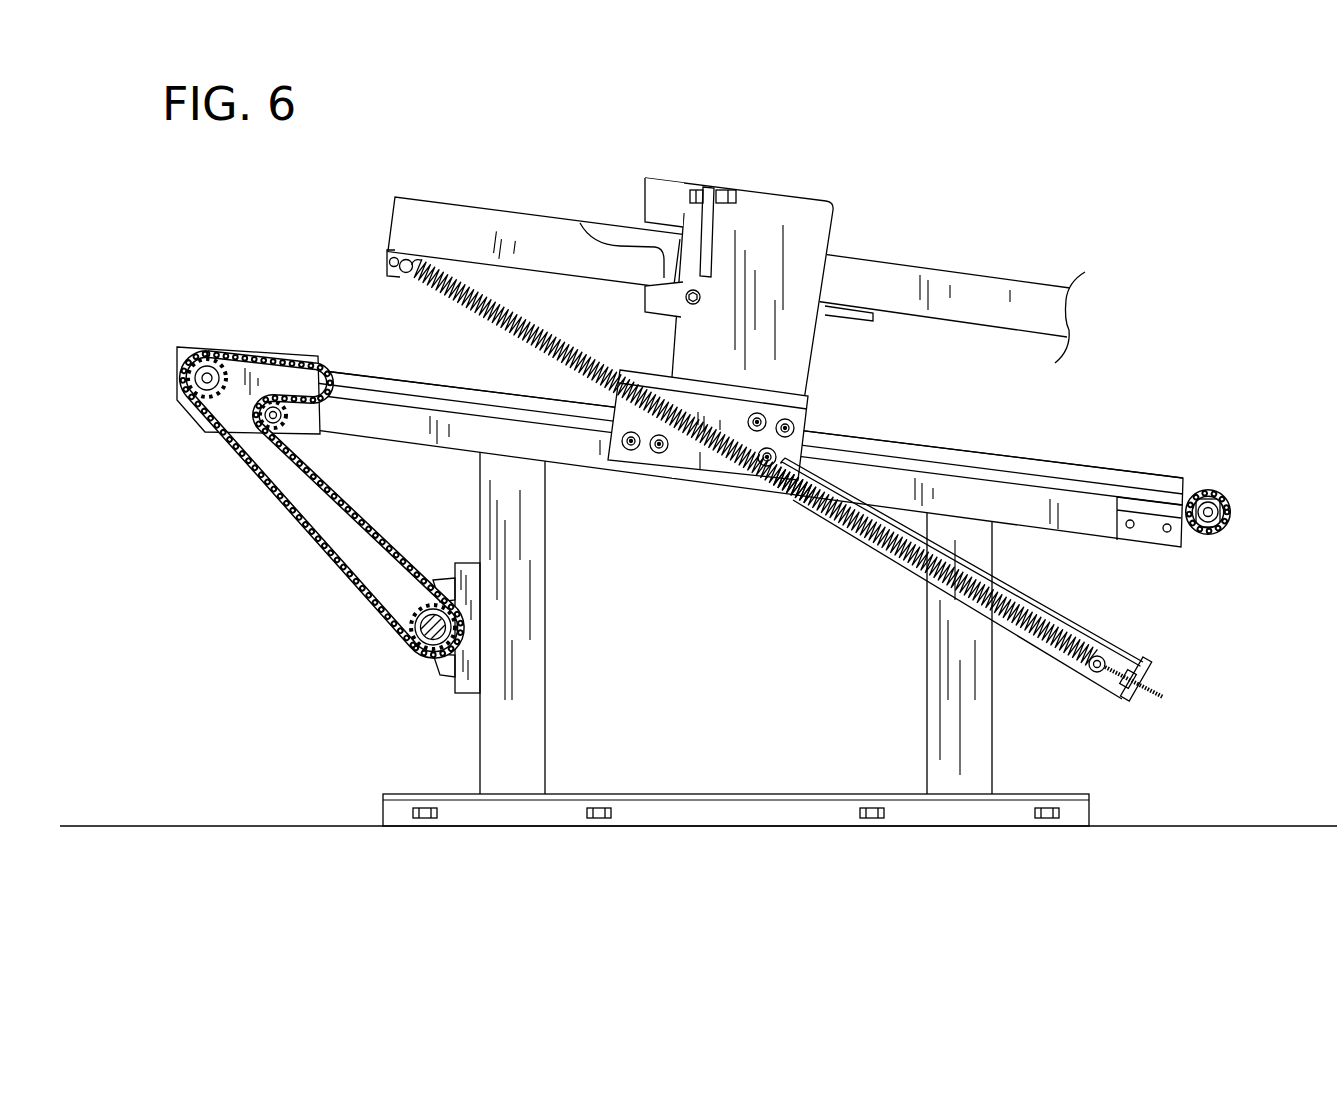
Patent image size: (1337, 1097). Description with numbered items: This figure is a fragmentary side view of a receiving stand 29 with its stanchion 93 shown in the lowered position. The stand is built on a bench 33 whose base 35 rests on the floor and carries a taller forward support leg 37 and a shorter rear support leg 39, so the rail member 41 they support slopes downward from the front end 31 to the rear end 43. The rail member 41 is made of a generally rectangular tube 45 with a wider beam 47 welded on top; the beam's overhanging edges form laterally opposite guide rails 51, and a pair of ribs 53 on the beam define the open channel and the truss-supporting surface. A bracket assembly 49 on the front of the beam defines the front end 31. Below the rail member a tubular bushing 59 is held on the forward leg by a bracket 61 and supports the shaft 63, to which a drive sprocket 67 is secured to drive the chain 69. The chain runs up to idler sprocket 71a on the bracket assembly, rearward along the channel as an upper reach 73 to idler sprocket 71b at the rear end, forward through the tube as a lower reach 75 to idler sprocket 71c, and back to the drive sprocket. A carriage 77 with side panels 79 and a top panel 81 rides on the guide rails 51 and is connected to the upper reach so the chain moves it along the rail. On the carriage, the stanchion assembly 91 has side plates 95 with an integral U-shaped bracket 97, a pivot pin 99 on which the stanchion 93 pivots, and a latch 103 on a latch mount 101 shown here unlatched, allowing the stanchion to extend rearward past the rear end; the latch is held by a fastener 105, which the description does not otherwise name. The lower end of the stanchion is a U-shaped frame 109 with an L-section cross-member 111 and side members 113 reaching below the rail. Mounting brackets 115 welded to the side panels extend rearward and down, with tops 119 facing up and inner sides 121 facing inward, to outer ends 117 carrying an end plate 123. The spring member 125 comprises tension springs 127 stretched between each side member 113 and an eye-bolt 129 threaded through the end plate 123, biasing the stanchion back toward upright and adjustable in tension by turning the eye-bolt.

The receiving stand 29 is at (1083, 165).
The front end 31 is at (150, 385).
The bench 33 is at (427, 740).
The base 35 is at (705, 828).
The forward support leg 37 is at (552, 712).
The rear support leg 39 is at (926, 708).
The rail member 41 is at (630, 480).
The rear end 43 is at (1200, 540).
The rectangular tube 45 is at (468, 443).
The beam 47 is at (350, 380).
The bracket assembly 49 is at (193, 405).
The guide rails 51 is at (476, 396).
The ribs 53 is at (388, 378).
The tubular bushing 59 is at (420, 633).
The bracket 61 is at (453, 578).
The shaft 63 is at (425, 660).
The drive sprocket 67 is at (392, 600).
The chain 69 is at (290, 500).
The idler sprocket 71a is at (232, 350).
The idler sprocket 71b is at (1232, 495).
The idler sprocket 71c is at (305, 420).
The upper reach 73 is at (237, 355).
The lower reach 75 is at (300, 366).
The carriage 77 is at (833, 409).
The side panels 79 is at (680, 460).
The top panel 81 is at (812, 392).
The stanchion assembly 91 is at (850, 190).
The stanchion 93 is at (998, 277).
The side plates 95 is at (772, 207).
The U-shaped bracket 97 is at (642, 197).
The pivot pin 99 is at (695, 305).
The latch mount 101 is at (723, 195).
The latch 103 is at (702, 215).
The nut 105 is at (693, 190).
The U-shaped frame 109 is at (473, 197).
The cross-member 111 is at (590, 230).
The side members 113 is at (438, 200).
The mounting brackets 115 is at (852, 565).
The outer ends 117 is at (1165, 685).
The tops 119 is at (1065, 613).
The inner sides 121 is at (790, 520).
The end plate 123 is at (1135, 690).
The spring member 125 is at (780, 504).
The tension springs 127 is at (905, 570).
The eye-bolt 129 is at (1112, 660).